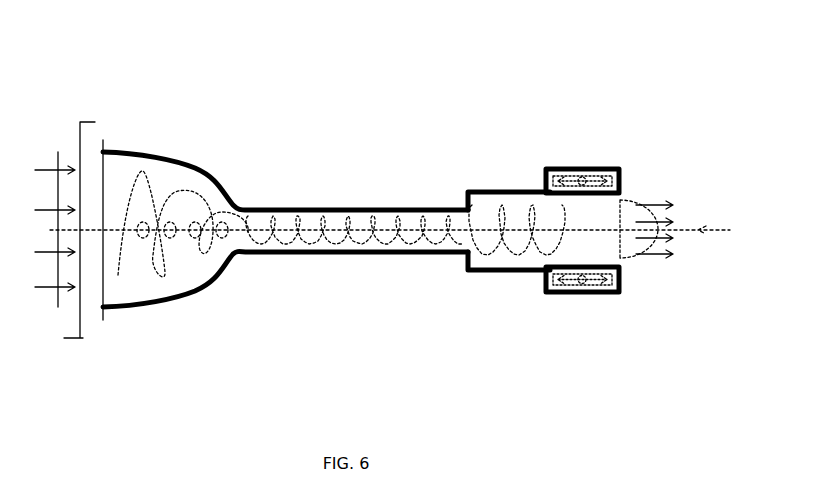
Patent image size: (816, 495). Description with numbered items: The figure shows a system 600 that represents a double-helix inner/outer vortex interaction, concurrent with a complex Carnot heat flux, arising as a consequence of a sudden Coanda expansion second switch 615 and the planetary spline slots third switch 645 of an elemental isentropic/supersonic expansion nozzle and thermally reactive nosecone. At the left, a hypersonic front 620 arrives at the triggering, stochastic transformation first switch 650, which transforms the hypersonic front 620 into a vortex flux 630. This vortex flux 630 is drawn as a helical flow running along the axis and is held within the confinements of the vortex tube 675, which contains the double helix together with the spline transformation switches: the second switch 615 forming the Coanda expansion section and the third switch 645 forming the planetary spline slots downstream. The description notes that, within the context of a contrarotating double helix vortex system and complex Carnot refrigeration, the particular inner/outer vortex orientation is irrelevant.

The system 600 is at (708, 119).
The second switch 615 is at (477, 187).
The hypersonic front 620 is at (70, 303).
The vortex flux 630 is at (327, 247).
The third switch 645 is at (563, 170).
The first switch 650 is at (95, 133).
The vortex tube 675 is at (397, 257).